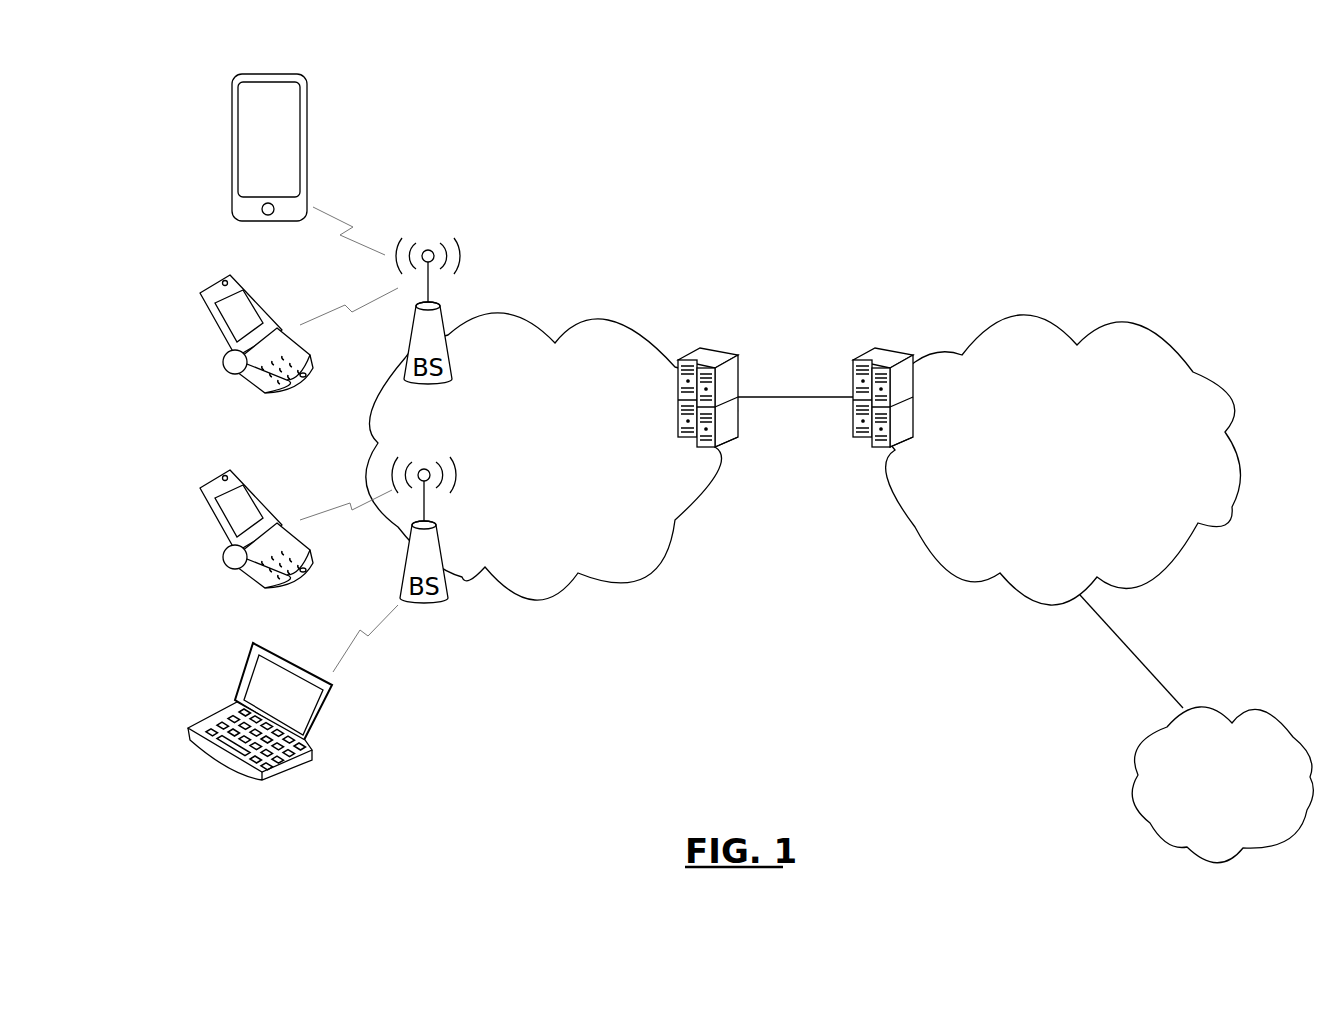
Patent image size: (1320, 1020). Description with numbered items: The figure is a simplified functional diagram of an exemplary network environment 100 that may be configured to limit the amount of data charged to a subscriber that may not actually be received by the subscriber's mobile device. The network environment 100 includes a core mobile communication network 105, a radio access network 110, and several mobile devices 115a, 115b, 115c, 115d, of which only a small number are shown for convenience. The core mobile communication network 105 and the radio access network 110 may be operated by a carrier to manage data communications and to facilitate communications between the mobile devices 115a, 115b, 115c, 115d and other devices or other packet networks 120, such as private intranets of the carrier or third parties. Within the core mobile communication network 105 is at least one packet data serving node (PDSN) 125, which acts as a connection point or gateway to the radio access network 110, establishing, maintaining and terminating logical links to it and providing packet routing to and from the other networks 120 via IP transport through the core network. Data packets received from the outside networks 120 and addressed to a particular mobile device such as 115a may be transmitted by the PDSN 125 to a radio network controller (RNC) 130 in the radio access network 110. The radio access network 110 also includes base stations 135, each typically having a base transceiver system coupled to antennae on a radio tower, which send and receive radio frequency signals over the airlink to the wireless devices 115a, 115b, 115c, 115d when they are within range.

The network environment 100 is at (851, 88).
The core mobile communication network 105 is at (1060, 460).
The radio access network 110 is at (552, 456).
The mobile device 115a is at (233, 122).
The mobile device 115b is at (200, 323).
The mobile device 115c is at (198, 500).
The mobile device 115d is at (214, 703).
The other packet networks 120 is at (1222, 785).
The packet data serving node (PDSN) 125 is at (878, 350).
The radio network controller (RNC) 130 is at (700, 350).
The base station 135 is at (428, 242).